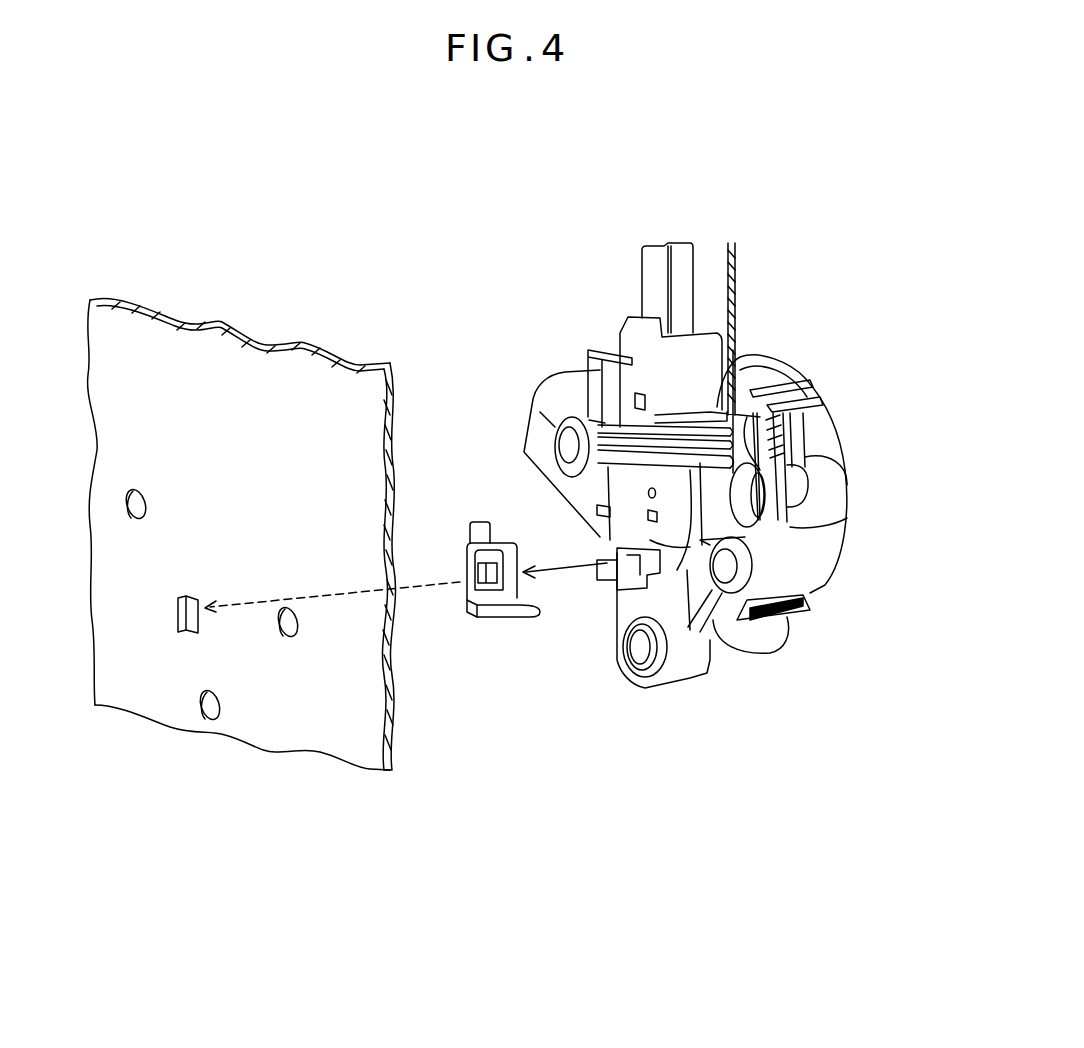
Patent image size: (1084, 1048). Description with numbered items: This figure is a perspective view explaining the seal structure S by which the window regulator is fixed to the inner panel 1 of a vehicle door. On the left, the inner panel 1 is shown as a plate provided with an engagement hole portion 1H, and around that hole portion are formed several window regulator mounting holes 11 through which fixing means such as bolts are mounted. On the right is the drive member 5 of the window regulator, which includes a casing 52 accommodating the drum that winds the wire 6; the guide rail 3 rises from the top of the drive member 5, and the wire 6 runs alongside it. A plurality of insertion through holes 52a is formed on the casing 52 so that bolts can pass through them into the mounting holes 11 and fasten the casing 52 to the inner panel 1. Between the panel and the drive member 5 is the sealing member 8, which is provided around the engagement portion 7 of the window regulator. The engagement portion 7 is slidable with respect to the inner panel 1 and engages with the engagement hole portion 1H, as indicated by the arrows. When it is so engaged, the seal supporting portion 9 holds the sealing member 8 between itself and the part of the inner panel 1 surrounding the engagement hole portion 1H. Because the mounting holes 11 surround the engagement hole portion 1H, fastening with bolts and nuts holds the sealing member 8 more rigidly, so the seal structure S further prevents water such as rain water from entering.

The inner panel 1 is at (351, 733).
The engagement hole portion 1H is at (183, 635).
The window regulator mounting holes 11 is at (124, 508).
The guide rail 3 is at (650, 272).
The drive member 5 is at (800, 347).
The wire 6 is at (735, 273).
The engagement portion 7 is at (620, 585).
The sealing member 8 is at (472, 627).
The seal supporting portion 9 is at (765, 538).
The casing 52 is at (752, 563).
The insertion through holes 52a is at (560, 450).
The seal structure S is at (587, 883).